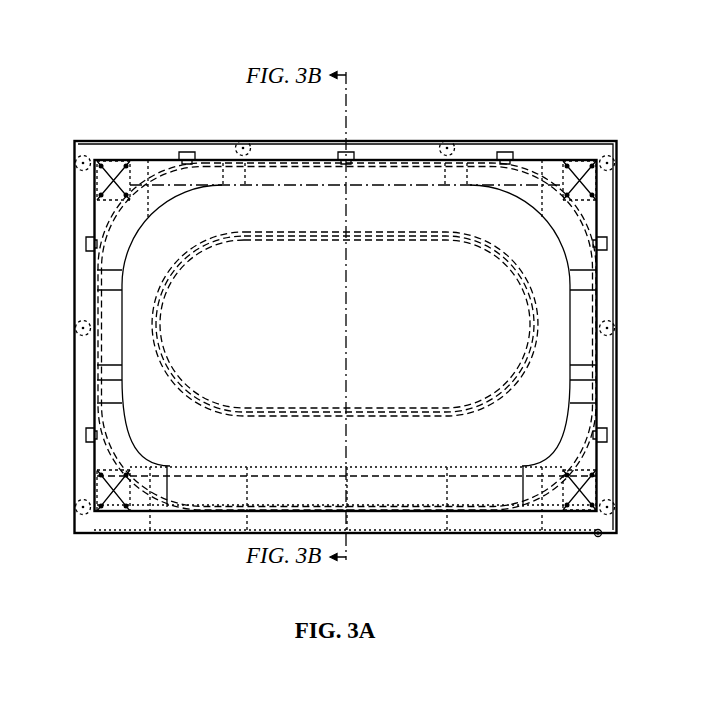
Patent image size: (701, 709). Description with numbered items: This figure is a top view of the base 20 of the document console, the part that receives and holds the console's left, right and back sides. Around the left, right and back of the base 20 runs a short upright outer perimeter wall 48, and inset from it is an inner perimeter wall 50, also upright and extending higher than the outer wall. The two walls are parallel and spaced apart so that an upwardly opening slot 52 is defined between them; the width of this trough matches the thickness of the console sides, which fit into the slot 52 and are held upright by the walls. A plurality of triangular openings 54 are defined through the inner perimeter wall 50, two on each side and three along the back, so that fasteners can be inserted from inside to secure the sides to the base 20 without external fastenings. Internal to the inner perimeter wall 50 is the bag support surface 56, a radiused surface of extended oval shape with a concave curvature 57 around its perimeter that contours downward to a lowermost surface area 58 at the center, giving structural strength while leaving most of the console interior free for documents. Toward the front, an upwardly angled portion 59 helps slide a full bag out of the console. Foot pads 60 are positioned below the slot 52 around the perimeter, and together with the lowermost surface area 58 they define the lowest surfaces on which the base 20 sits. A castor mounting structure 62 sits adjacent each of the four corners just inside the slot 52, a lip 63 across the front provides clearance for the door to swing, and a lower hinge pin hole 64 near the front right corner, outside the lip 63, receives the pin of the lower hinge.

The base 20 is at (488, 90).
The outer perimeter wall 48 is at (362, 145).
The inner perimeter wall 50 is at (383, 160).
The slot 52 is at (82, 189).
The openings 54 is at (187, 152).
The bag support surface 56 is at (182, 226).
The concave curvature 57 is at (166, 190).
The lowermost surface area 58 is at (231, 335).
The upwardly angled portion 59 is at (186, 488).
The foot pads 60 is at (241, 144).
The castor mounting structure 62 is at (114, 158).
The lip 63 is at (220, 520).
The lower hinge pin hole 64 is at (602, 534).